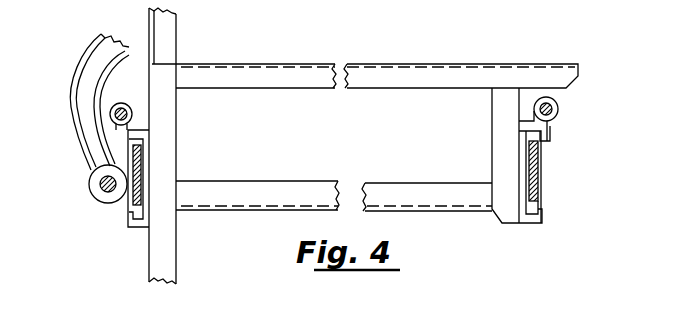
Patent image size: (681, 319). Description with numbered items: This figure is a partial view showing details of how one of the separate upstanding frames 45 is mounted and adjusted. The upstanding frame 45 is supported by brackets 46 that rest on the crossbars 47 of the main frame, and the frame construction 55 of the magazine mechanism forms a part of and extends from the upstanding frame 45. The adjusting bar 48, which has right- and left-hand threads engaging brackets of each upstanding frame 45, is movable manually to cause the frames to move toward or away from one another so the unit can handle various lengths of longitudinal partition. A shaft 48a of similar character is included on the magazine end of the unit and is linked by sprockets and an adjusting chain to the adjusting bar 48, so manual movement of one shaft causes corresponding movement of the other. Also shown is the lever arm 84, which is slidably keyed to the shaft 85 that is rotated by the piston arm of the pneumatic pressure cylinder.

The upstanding frame 45 is at (150, 249).
The frame construction 55 is at (435, 53).
The lever arm 84 is at (77, 107).
The shaft 85 is at (104, 194).
The adjusting bar 48 is at (121, 103).
The shaft 48a is at (557, 106).
The bracket 46 is at (143, 140).
The crossbar 47 is at (137, 170).